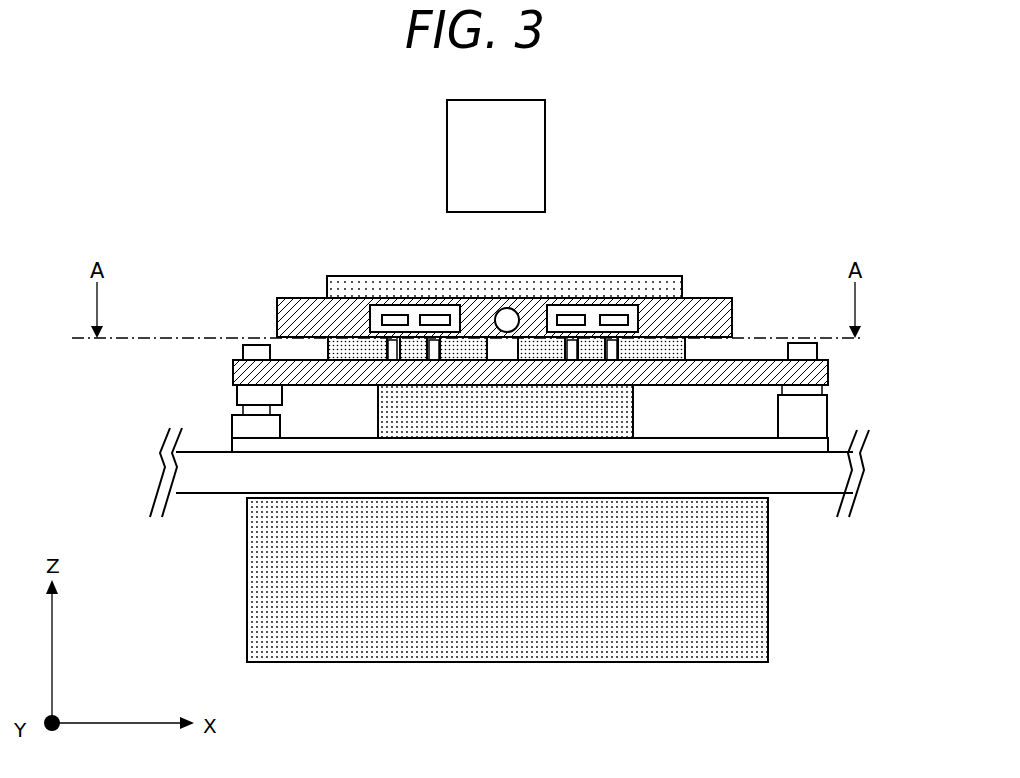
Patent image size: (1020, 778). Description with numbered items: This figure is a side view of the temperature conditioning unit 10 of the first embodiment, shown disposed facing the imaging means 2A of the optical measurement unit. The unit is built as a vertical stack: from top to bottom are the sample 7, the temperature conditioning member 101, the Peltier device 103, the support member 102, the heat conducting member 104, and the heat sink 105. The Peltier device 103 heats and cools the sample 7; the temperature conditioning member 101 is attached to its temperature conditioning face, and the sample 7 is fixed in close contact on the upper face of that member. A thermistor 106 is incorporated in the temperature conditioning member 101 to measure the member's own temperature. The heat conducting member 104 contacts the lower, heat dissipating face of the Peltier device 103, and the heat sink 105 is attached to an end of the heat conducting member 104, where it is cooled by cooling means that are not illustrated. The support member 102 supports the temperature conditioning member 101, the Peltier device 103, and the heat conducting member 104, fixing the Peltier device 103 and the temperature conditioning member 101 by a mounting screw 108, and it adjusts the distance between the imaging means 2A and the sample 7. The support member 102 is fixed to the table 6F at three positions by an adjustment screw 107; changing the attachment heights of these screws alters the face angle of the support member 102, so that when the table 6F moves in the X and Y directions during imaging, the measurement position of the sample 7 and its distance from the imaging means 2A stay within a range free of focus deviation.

The temperature conditioning unit 10 is at (270, 193).
The imaging means 2A is at (540, 150).
The sample 7 is at (656, 288).
The temperature conditioning member 101 is at (283, 297).
The support member 102 is at (250, 373).
The Peltier device 103 is at (351, 333).
The heat conducting member 104 is at (607, 413).
The heat sink 105 is at (568, 650).
The thermistor 106 is at (508, 307).
The adjustment screw 107 is at (255, 345).
The mounting screw 108 is at (435, 314).
The table 6F is at (212, 483).